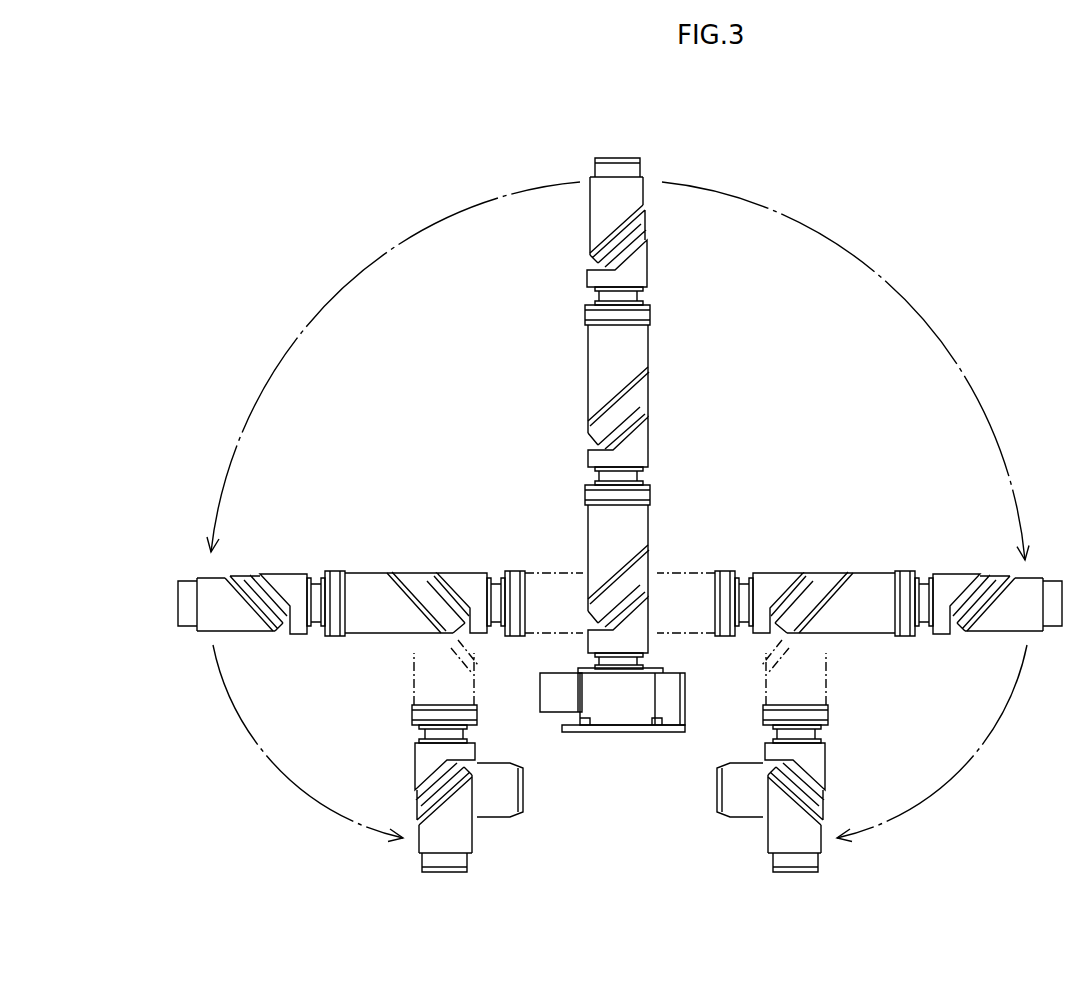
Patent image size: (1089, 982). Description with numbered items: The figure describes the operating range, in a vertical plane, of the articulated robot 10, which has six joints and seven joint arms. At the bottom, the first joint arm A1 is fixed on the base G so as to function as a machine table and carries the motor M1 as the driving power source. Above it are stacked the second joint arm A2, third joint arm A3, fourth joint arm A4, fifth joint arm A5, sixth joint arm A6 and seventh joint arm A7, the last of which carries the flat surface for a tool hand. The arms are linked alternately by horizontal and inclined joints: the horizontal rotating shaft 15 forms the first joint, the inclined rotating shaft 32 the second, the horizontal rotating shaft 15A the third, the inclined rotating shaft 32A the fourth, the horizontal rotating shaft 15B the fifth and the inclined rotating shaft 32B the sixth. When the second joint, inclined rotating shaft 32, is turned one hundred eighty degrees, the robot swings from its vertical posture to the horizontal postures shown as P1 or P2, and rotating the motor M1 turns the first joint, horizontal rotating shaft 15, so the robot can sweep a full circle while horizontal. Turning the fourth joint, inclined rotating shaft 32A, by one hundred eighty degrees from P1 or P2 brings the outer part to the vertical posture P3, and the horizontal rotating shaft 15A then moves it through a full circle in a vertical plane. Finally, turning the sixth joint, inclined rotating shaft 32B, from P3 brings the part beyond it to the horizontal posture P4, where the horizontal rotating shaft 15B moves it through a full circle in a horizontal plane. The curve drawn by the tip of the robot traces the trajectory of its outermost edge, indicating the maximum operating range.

The articulated robot 10 is at (679, 142).
The first joint arm A1 is at (617, 708).
The second joint arm A2 is at (637, 632).
The third joint arm A3 is at (598, 532).
The fourth joint arm A4 is at (637, 445).
The fifth joint arm A5 is at (595, 357).
The sixth joint arm A6 is at (641, 262).
The seventh joint arm A7 is at (601, 192).
The horizontal rotating shaft 15 is at (643, 667).
The horizontal rotating shaft 15A is at (640, 480).
The horizontal rotating shaft 15B is at (637, 298).
The inclined rotating shaft 32 is at (655, 570).
The inclined rotating shaft 32A is at (637, 410).
The inclined rotating shaft 32B is at (640, 230).
The motor M1 is at (555, 693).
The base G is at (643, 733).
The horizontal posture P1 is at (287, 570).
The horizontal posture P2 is at (948, 570).
The vertical posture P3 is at (413, 668).
The horizontal posture P4 is at (477, 867).